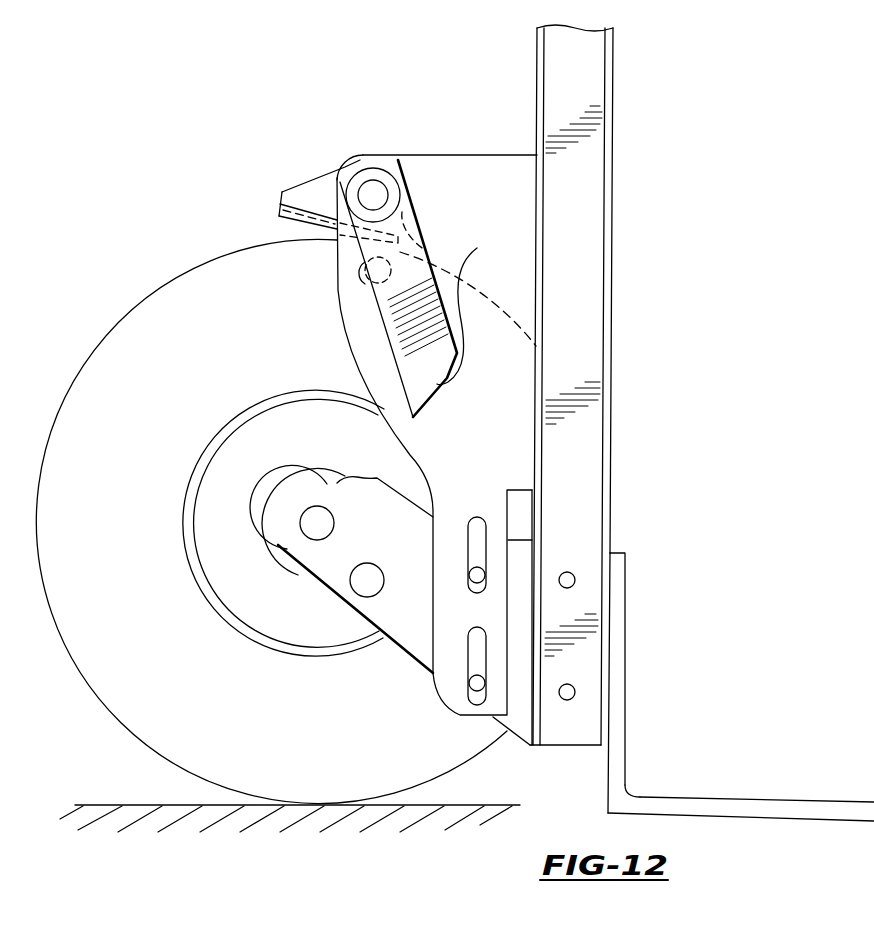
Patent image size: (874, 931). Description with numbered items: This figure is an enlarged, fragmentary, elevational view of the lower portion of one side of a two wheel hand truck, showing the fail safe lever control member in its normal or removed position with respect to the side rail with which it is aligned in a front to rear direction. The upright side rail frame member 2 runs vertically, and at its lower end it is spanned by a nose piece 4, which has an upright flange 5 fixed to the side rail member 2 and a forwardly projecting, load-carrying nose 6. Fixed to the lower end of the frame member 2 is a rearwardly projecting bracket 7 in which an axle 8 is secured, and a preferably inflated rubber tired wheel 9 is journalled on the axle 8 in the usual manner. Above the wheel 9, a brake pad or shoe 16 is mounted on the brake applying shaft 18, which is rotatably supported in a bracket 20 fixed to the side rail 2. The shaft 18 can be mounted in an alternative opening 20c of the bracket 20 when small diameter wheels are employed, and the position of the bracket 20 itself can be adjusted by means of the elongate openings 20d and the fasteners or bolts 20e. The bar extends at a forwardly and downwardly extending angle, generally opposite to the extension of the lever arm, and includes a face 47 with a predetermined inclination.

The upright side rail frame member 2 is at (560, 85).
The nose piece 4 is at (658, 788).
The upright flange 5 is at (628, 690).
The load-carrying nose 6 is at (834, 805).
The bracket 7 is at (408, 638).
The axle 8 is at (305, 527).
The wheel 9 is at (103, 350).
The brake pad or shoe 16 is at (303, 194).
The brake applying shaft 18 is at (373, 190).
The bracket 20 is at (421, 157).
The alternative opening 20c is at (357, 280).
The elongate opening 20d is at (482, 575).
The fastener or bolt 20e is at (478, 682).
The face 47 is at (473, 305).